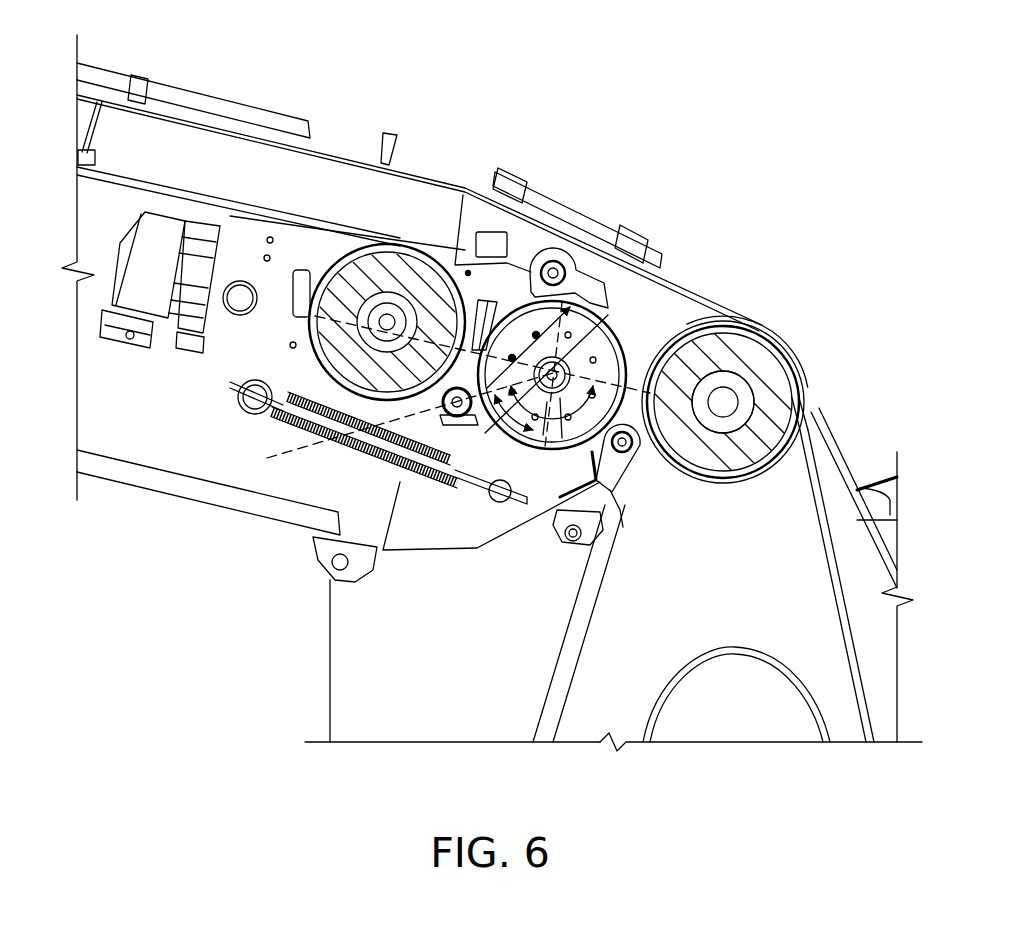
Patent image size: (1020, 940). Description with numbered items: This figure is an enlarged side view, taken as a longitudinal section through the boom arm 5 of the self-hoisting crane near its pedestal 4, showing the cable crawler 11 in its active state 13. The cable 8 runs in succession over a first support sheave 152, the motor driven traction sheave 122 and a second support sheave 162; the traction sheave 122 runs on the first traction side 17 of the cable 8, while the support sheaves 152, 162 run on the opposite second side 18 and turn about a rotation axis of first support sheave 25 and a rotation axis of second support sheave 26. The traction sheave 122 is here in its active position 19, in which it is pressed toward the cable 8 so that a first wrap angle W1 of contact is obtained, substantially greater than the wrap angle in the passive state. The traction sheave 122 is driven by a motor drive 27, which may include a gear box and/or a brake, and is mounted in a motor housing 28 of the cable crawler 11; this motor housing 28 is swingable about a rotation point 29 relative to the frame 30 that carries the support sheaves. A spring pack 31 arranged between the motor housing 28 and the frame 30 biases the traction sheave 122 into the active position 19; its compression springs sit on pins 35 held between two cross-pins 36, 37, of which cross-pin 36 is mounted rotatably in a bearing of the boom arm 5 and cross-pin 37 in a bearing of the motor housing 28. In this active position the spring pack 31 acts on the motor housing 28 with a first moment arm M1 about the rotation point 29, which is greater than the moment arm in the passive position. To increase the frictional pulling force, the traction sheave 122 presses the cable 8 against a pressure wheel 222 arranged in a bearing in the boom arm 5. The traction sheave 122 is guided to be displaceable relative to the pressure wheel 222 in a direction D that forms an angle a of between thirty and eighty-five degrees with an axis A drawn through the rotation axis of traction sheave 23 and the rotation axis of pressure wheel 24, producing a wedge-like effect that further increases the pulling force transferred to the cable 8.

The pedestal 4 is at (843, 718).
The boom arm 5 is at (305, 163).
The cable 8 is at (237, 235).
The cable crawler 11 is at (567, 196).
The motor driven traction sheave 122 is at (652, 300).
The active state of cable crawler 13 is at (415, 88).
The first support sheave 152 is at (757, 360).
The second support sheave 162 is at (407, 265).
The first traction side of cable 17 is at (143, 177).
The second side of cable 18 is at (102, 184).
The active position of traction sheave 19 is at (572, 362).
The pressure wheel 222 is at (452, 420).
The rotation axis of traction sheave 23 is at (618, 347).
The rotation axis of pressure wheel 24 is at (420, 490).
The rotation axis of first support sheave 25 is at (720, 405).
The rotation axis of second support sheave 26 is at (386, 318).
The motor drive 27 is at (145, 283).
The motor housing 28 is at (227, 222).
The rotation point of housing 29 is at (225, 305).
The frame 30 is at (185, 455).
The spring pack 31 is at (372, 465).
The pin for compression spring 35 is at (265, 430).
The cross-pin 36 is at (498, 495).
The cross-pin 37 is at (248, 410).
The axis through rotation axis of traction sheave and rotation axis of pressure whee A is at (290, 455).
The guide direction for traction sheave D is at (567, 453).
The first moment arm M1 is at (237, 305).
The first wrap angle W1 is at (608, 518).
The angle a is at (484, 450).